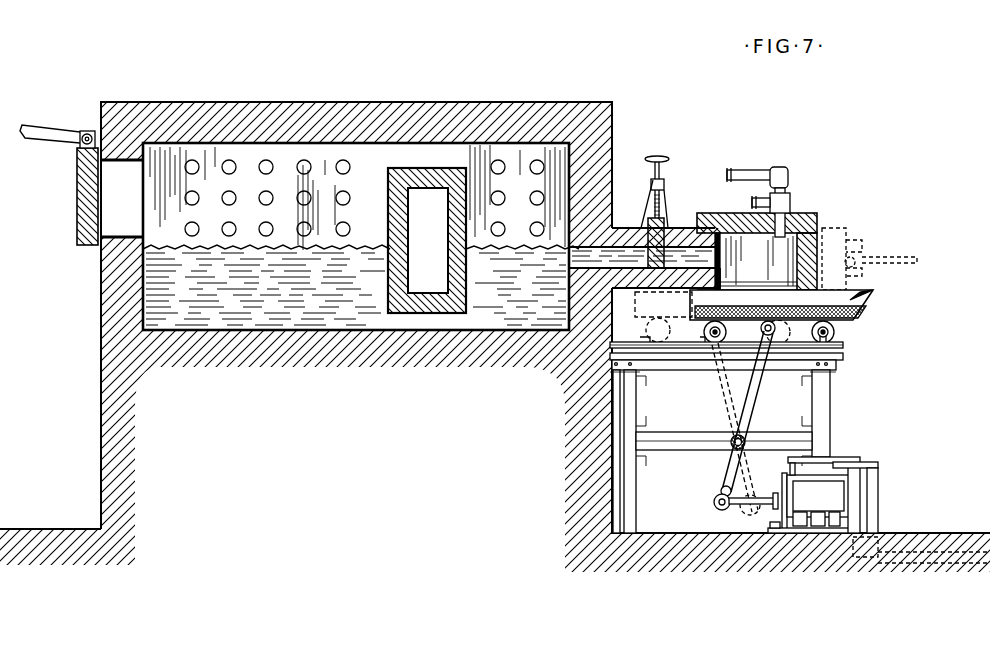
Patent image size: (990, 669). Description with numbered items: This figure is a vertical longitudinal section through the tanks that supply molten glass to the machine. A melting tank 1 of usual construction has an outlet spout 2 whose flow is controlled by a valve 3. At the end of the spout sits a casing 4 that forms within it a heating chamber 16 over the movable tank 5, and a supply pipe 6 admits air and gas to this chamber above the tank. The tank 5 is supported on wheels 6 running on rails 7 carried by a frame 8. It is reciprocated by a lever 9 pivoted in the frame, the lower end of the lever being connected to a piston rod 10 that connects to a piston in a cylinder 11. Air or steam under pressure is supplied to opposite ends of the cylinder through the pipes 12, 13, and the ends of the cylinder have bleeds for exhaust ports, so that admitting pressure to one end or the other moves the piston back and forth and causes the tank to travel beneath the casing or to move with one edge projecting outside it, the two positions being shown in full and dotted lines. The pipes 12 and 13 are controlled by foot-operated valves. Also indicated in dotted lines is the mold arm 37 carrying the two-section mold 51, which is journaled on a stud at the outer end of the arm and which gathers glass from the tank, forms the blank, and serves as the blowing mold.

The melting tank 1 is at (478, 101).
The outlet spout 2 is at (627, 227).
The valve 3 is at (663, 231).
The casing 4 is at (819, 216).
The heating chamber 16 is at (780, 257).
The supply pipe and wheels 6 is at (783, 174).
The mold 51 is at (854, 233).
The mold arm 37 is at (886, 257).
The movable tank 5 is at (866, 307).
The rails 7 is at (844, 347).
The frame 8 is at (821, 408).
The lever 9 is at (746, 404).
The piston rod 10 is at (717, 497).
The cylinder 11 is at (826, 500).
The pipe 12 is at (844, 455).
The pipe 13 is at (876, 503).